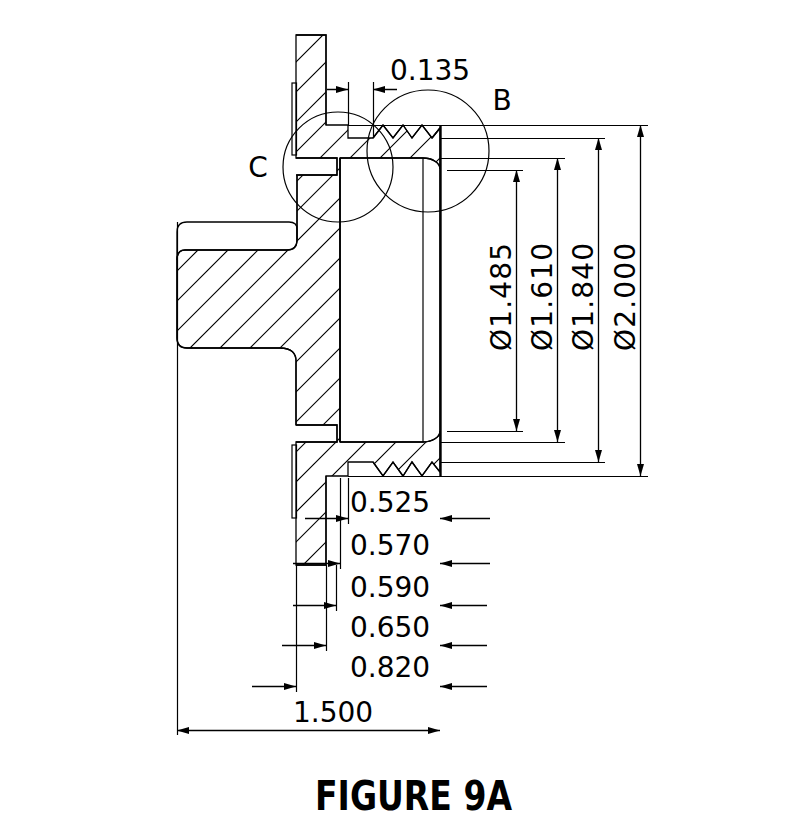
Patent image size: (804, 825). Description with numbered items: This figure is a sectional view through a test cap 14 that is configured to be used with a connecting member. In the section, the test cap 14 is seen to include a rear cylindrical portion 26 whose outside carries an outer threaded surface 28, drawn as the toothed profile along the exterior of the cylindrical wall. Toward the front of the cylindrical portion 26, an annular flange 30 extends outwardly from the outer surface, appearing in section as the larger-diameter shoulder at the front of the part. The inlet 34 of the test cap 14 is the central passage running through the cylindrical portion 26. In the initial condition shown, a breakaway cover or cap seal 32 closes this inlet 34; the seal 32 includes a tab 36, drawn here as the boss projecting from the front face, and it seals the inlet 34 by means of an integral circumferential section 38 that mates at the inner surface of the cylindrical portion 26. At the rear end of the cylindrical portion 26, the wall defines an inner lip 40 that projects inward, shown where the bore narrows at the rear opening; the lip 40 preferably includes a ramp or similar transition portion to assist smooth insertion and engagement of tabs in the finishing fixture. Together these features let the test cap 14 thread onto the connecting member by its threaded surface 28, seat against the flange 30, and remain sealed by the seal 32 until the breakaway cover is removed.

The test cap 14 is at (118, 210).
The rear cylindrical portion 26 is at (410, 130).
The outer threaded surface 28 is at (432, 132).
The annular flange 30 is at (312, 57).
The breakaway cover or cap seal 32 is at (310, 400).
The inlet 34 is at (363, 403).
The tab 36 is at (197, 320).
The integral circumferential section 38 is at (337, 436).
The inner lip 40 is at (432, 437).